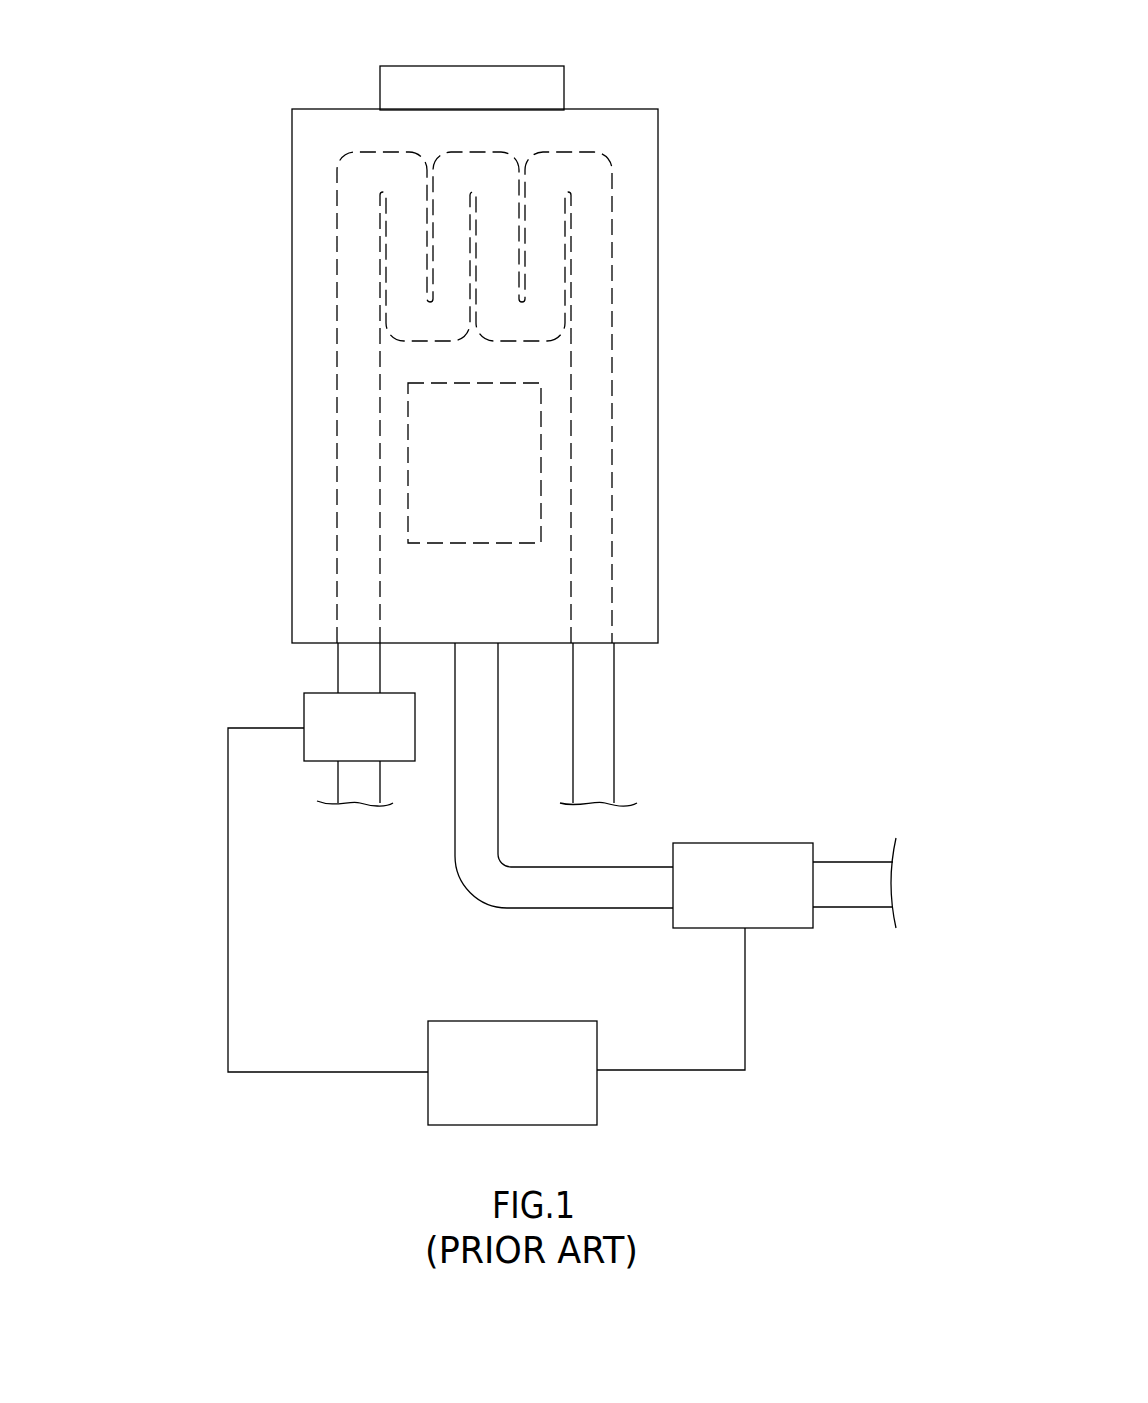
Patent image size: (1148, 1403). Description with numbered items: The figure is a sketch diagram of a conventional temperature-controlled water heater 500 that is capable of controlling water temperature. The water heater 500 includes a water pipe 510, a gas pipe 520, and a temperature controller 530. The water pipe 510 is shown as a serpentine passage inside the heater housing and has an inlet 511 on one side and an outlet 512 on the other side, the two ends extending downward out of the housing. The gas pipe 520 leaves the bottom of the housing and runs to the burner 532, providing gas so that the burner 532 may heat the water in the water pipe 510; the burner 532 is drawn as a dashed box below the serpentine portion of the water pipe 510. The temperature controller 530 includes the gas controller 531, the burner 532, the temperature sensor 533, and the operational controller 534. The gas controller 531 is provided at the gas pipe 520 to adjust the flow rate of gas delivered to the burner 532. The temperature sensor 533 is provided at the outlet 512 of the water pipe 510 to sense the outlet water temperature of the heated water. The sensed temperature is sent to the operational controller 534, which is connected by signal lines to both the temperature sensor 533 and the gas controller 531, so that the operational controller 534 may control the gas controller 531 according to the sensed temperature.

The water heater 500 is at (243, 88).
The water pipe 510 is at (593, 256).
The inlet 511 is at (592, 707).
The outlet 512 is at (355, 667).
The gas pipe 520 is at (477, 849).
The temperature controller 530 is at (247, 1137).
The gas controller 531 is at (783, 856).
The burner 532 is at (518, 503).
The temperature sensor 533 is at (318, 747).
The operational controller 534 is at (573, 1093).